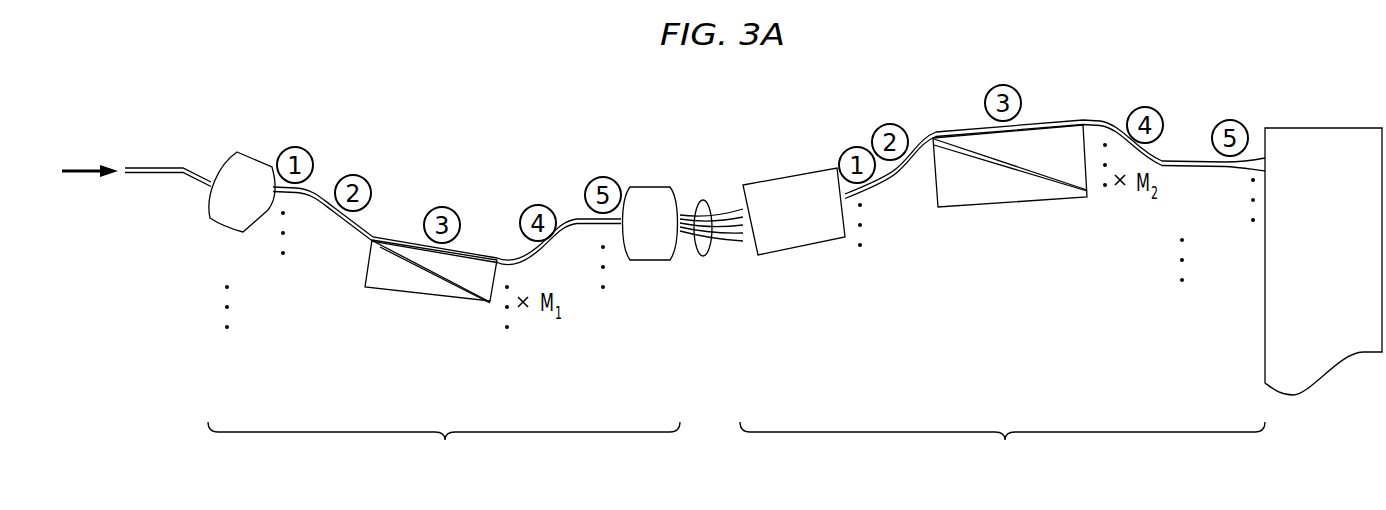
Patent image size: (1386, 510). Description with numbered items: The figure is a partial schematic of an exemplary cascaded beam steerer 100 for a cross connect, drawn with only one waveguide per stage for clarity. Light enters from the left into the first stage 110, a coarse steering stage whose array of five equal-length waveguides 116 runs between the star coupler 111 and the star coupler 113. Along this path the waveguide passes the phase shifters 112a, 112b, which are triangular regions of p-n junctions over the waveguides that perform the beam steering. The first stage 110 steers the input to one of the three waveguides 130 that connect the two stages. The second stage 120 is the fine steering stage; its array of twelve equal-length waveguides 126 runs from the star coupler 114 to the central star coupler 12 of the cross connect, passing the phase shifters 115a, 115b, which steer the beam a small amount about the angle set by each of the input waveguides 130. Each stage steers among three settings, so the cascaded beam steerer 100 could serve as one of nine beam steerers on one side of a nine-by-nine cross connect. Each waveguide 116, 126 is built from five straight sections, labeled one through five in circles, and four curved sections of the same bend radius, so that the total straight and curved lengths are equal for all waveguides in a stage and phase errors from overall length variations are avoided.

The cascaded beam steerer 100 is at (491, 107).
The first stage 110 is at (444, 448).
The second stage 120 is at (1002, 448).
The star coupler 111 is at (250, 157).
The waveguides 116 is at (318, 209).
The phase shifter 112a is at (392, 290).
The phase shifter 112b is at (470, 268).
The star coupler 113 is at (643, 187).
The waveguides 130 is at (703, 200).
The star coupler 114 is at (791, 172).
The waveguides 126 is at (921, 137).
The phase shifter 115a is at (972, 208).
The phase shifter 115b is at (1053, 138).
The central star coupler 12 is at (1320, 128).